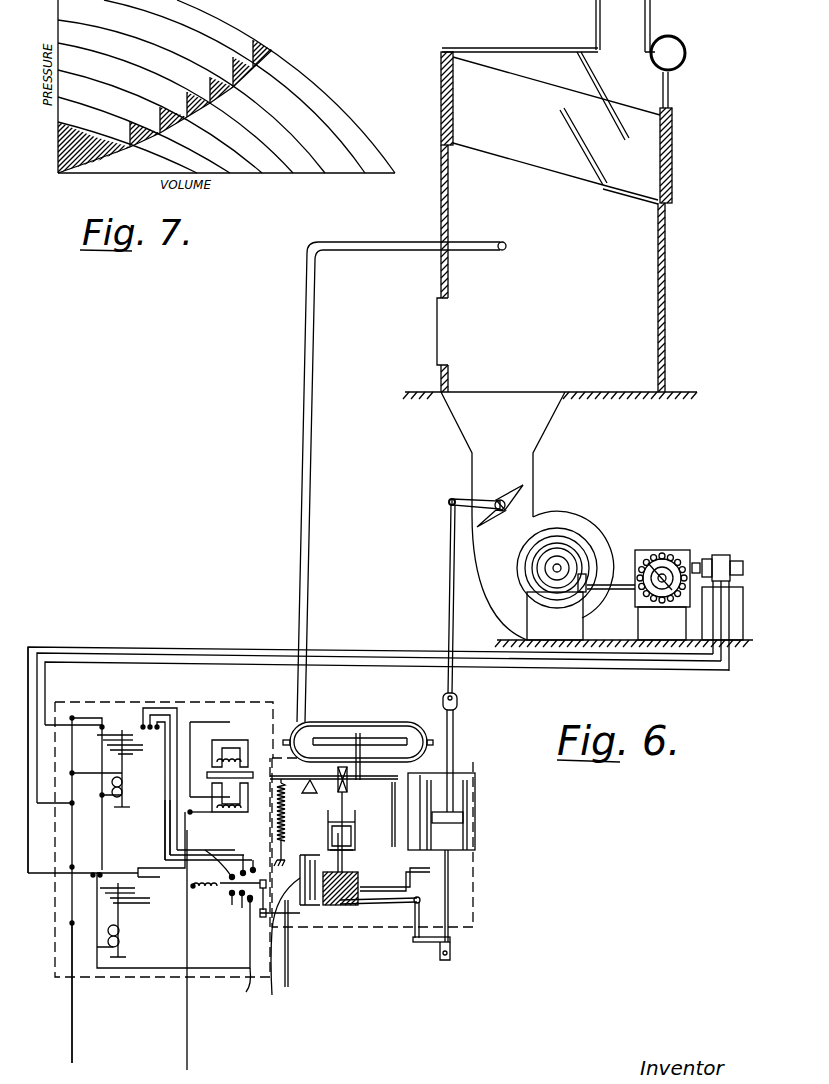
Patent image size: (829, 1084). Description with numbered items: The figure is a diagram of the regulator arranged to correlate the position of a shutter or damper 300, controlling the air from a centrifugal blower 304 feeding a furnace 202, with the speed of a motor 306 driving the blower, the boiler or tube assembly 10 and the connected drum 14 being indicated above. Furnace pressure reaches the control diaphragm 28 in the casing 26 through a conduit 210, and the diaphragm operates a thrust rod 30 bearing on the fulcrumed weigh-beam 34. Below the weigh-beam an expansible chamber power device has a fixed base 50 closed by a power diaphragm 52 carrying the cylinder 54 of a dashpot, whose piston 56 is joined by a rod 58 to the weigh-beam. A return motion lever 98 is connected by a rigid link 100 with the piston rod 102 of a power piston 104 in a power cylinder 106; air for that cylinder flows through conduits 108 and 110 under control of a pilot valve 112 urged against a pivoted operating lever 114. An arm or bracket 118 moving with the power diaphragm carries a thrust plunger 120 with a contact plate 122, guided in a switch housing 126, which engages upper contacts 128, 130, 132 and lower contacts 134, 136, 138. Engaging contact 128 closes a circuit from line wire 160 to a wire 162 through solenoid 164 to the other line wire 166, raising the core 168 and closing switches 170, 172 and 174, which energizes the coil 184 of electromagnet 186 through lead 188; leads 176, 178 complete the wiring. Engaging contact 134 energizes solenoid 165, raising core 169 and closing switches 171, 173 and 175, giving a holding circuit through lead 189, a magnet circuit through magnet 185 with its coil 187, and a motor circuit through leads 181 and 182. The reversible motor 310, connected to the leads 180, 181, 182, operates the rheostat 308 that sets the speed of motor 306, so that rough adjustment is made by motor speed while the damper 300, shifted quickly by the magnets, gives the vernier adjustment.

The boiler or tube assembly 10 is at (500, 69).
The drum 14 is at (680, 38).
The furnace 202 is at (460, 196).
The conduit 210 is at (419, 226).
The shutter or damper 300 is at (508, 494).
The centrifugal blower 304 is at (563, 525).
The motor 306 is at (582, 551).
The rheostat 308 is at (675, 561).
The reversible motor 310 is at (731, 561).
The lead 181 is at (140, 647).
The lead 180 is at (185, 653).
The lead 182 is at (226, 662).
The lead 188 is at (181, 712).
The lead 189 is at (187, 724).
The switch 174 is at (126, 734).
The switch 172 is at (118, 738).
The switch 170 is at (128, 753).
The solenoid 164 is at (127, 784).
The core 168 is at (126, 802).
The conductor 176 is at (165, 819).
The conductor 178 is at (170, 834).
The wire 162 is at (112, 866).
The switch 175 is at (118, 884).
The switch 173 is at (110, 894).
The switch 171 is at (110, 904).
The solenoid 165 is at (126, 936).
The solenoid core 169 is at (126, 951).
The switch housing 126 is at (60, 929).
The line wire 166 is at (71, 995).
The line wire 160 is at (187, 999).
The magnet 185 is at (237, 745).
The solenoid coil 187 is at (245, 755).
The electromagnet 186 is at (245, 797).
The coil 184 is at (240, 807).
The contact 132 is at (215, 855).
The contact 130 is at (243, 855).
The contact 128 is at (254, 860).
The contact plate 122 is at (223, 888).
The contact 138 is at (232, 896).
The contact 136 is at (242, 896).
The contact 134 is at (250, 900).
The thrust plunger 120 is at (236, 985).
The pilot valve 112 is at (280, 985).
The casing 26 is at (366, 725).
The diaphragm 28 is at (421, 738).
The thrust rod 30 is at (344, 737).
The weigh-beam 34 is at (300, 768).
The rod 58 is at (346, 801).
The cylinder 54 is at (330, 816).
The piston 56 is at (330, 829).
The power diaphragm 52 is at (354, 848).
The fixed base 50 is at (328, 846).
The piston rod 102 is at (449, 894).
The conduit 108 is at (452, 806).
The power piston 104 is at (465, 819).
The power cylinder 106 is at (473, 839).
The conduit 110 is at (416, 874).
The return motion lever 98 is at (384, 899).
The rigid link 100 is at (414, 929).
The arm or bracket 118 is at (312, 906).
The operating lever 114 is at (289, 930).